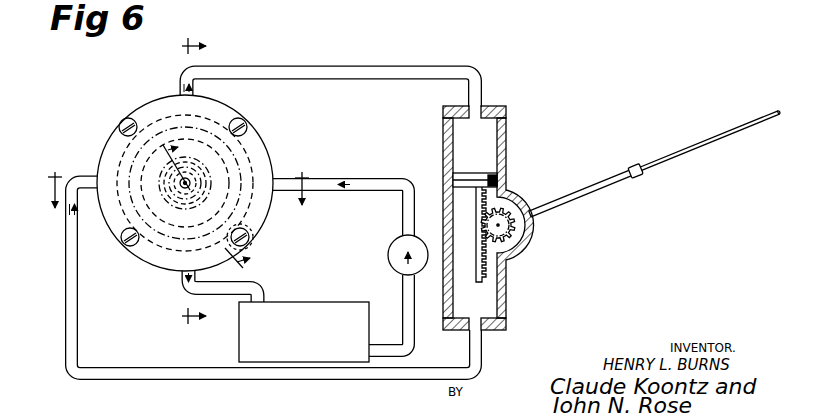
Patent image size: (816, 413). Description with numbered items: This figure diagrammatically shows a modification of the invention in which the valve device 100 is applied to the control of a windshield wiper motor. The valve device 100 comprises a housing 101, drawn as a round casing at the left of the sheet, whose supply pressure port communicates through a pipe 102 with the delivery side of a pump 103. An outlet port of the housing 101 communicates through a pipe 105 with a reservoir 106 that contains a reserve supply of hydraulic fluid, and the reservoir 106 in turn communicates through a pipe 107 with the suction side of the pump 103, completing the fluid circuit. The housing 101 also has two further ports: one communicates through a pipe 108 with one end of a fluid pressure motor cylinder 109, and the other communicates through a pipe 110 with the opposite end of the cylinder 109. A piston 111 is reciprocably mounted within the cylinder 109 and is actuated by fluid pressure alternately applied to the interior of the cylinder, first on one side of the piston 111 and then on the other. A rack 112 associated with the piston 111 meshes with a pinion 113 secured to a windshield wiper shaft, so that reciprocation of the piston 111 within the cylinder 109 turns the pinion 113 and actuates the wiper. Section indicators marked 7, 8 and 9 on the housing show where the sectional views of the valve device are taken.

The valve device 100 is at (272, 137).
The housing 101 is at (276, 166).
The pipe 102 is at (370, 173).
The pump 103 is at (387, 256).
The pipe 105 is at (248, 286).
The reservoir 106 is at (339, 298).
The pipe 107 is at (403, 291).
The pipe 108 is at (373, 60).
The fluid pressure motor cylinder 109 is at (506, 151).
The pipe 110 is at (174, 360).
The piston 111 is at (504, 180).
The rack 112 is at (463, 270).
The pinion 113 is at (527, 247).
The section line 7- 7 is at (178, 202).
The section line 8- 8 is at (201, 182).
The section line 9- 9 is at (214, 201).